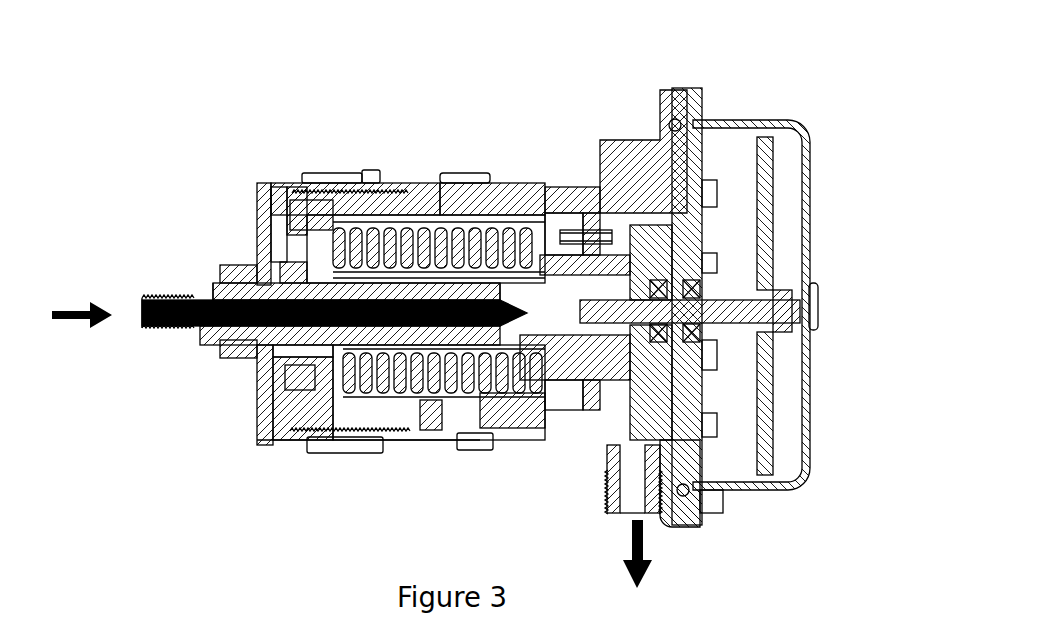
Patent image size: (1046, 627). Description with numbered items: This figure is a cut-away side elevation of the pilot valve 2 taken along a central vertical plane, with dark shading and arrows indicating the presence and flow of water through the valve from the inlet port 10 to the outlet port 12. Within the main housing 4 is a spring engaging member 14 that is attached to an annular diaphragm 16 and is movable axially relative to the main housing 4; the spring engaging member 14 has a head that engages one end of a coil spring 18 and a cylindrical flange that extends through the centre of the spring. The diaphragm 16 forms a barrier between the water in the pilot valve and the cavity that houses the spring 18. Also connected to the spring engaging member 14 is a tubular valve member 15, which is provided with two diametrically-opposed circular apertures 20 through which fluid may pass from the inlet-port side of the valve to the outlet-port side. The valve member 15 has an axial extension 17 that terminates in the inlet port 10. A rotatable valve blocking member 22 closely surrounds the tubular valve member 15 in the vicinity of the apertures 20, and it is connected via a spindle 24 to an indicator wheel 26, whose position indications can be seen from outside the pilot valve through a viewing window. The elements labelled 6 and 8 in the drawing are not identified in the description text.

The pilot valve 2 is at (126, 117).
The main housing 4 is at (447, 200).
The actuator cup 6 is at (747, 120).
The end cap 8 is at (273, 187).
The inlet port 10 is at (165, 295).
The outlet port 12 is at (630, 495).
The spring engaging member 14 is at (578, 208).
The tubular valve member 15 is at (487, 207).
The annular diaphragm 16 is at (533, 300).
The axial extension 17 is at (207, 332).
The coil spring 18 is at (330, 378).
The circular apertures 20 is at (483, 327).
The rotatable valve blocking member 22 is at (533, 300).
The spindle 24 is at (660, 307).
The indicator wheel 26 is at (760, 238).